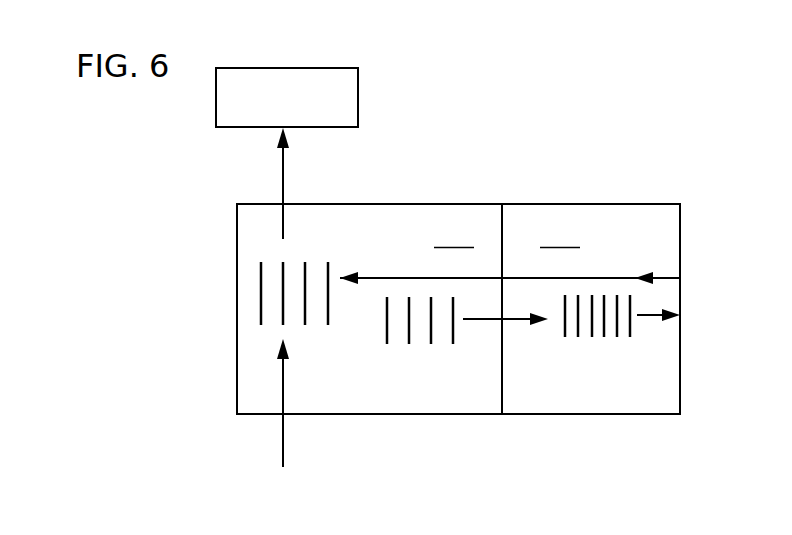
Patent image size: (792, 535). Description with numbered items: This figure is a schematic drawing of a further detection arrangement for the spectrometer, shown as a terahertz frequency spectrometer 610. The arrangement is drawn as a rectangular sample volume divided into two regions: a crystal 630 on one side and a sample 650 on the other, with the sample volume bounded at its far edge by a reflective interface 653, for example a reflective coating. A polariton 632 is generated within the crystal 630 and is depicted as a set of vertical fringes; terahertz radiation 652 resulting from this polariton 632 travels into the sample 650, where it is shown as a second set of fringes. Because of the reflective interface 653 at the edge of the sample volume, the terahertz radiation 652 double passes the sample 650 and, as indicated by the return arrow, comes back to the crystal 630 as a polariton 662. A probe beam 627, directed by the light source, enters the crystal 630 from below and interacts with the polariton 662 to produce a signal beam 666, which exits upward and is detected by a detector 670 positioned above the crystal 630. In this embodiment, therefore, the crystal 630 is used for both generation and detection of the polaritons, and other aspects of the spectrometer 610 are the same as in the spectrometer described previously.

The terahertz frequency spectrometer 610 is at (210, 310).
The probe beam 627 is at (285, 427).
The crystal 630 is at (454, 237).
The polariton 632 is at (423, 343).
The sample 650 is at (560, 237).
The terahertz radiation 652 is at (593, 341).
The reflective interface 653 is at (680, 345).
The polariton 662 is at (292, 258).
The signal beam 666 is at (285, 160).
The detector 670 is at (358, 96).